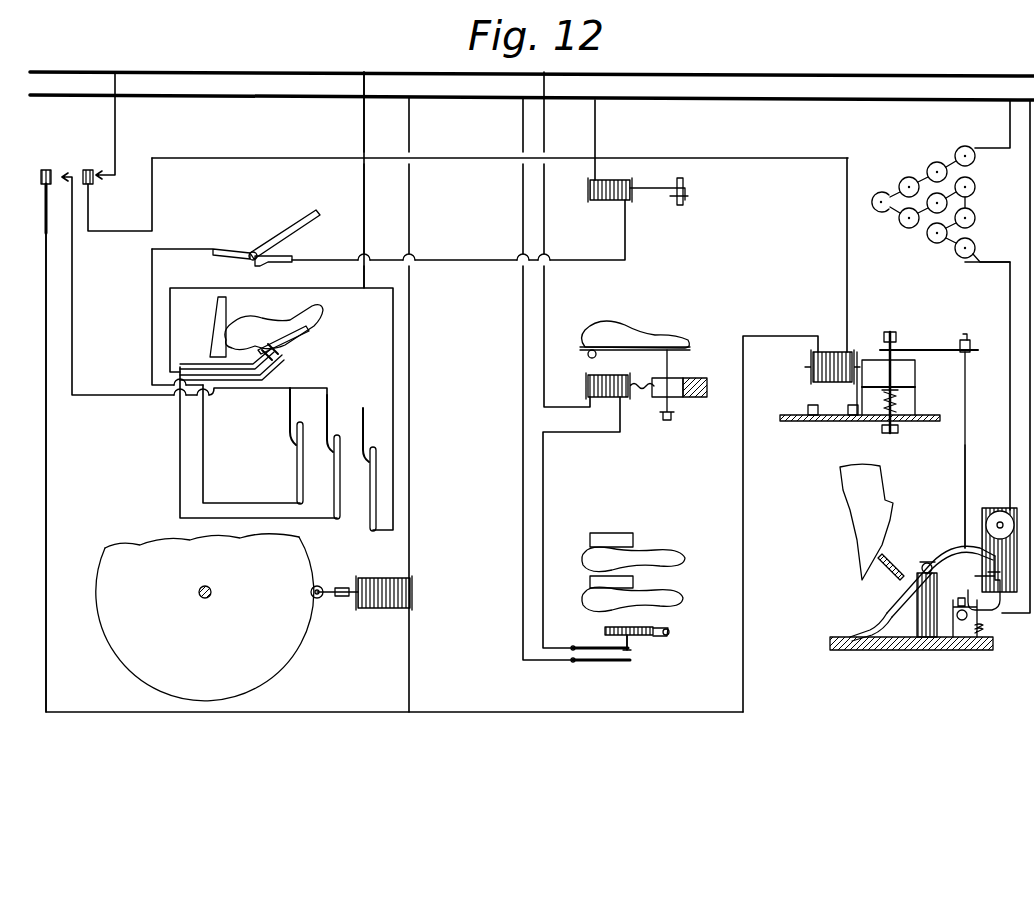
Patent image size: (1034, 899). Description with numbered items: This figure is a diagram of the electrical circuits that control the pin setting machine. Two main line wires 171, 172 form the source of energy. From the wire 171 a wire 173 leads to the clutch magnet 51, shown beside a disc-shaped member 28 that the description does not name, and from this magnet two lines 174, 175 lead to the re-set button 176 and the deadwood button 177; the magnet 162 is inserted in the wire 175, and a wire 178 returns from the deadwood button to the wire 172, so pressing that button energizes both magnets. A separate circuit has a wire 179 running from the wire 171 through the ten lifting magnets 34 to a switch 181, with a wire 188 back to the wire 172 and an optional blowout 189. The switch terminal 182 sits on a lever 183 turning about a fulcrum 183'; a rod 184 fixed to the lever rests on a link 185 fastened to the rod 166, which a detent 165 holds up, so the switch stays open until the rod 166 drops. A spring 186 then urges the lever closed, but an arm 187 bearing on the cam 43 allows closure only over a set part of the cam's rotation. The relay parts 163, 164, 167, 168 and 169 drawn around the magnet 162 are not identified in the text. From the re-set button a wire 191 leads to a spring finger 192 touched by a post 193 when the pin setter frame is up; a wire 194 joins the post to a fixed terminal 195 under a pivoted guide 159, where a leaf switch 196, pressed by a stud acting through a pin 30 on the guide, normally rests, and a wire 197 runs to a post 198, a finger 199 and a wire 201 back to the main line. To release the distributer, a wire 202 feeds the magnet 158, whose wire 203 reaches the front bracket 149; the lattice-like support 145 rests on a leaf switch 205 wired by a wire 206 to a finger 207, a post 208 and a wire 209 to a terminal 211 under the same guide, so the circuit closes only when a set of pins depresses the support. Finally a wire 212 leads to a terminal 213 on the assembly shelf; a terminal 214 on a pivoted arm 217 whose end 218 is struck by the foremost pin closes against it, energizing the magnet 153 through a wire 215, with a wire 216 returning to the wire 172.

The main line wire 172 is at (948, 76).
The main line wire 171 is at (929, 100).
The wire 178 is at (116, 114).
The switch button 176 is at (45, 192).
The switch button 177 is at (91, 186).
The wire 191 is at (72, 282).
The wire 206 is at (152, 329).
The wire 209 is at (180, 440).
The wire 194 is at (203, 454).
The spring contact finger 192 is at (289, 422).
The metallic contact post 193 is at (297, 478).
The spring contact finger 207 is at (328, 432).
The metallic contact post 208 is at (337, 522).
The finger 199 is at (367, 429).
The metallic contact post 198 is at (377, 471).
The fixed terminal 195 is at (282, 367).
The leaf switch 196 is at (280, 350).
The wire 197 is at (274, 350).
The pivotally mounted guide 159 is at (306, 329).
The bowling pin 30 is at (302, 320).
The fixed terminal 211 is at (252, 333).
The leaf switch 205 is at (234, 249).
The lattice-like support 145 is at (318, 211).
The front bracket 149 is at (294, 258).
The wire 201 is at (364, 210).
The wire 203 is at (460, 255).
The wire 173 is at (409, 394).
The wire 212 is at (523, 301).
The wire 216 is at (544, 284).
The wire 215 is at (543, 496).
The wire 202 is at (595, 124).
The magnet 158 is at (598, 203).
The magnet 153 is at (604, 400).
The end of arm 218 is at (620, 630).
The terminal 214 is at (588, 647).
The arm 217 is at (660, 636).
The terminal 213 is at (596, 663).
The wire 174 is at (322, 712).
The wire 175 is at (511, 712).
The rotary disc 28 is at (288, 650).
The magnet 51 is at (384, 611).
The wire 179 is at (1010, 288).
The magnets 34 is at (909, 229).
The wire 188 is at (1030, 423).
The magnet 162 is at (826, 351).
The base 163 is at (826, 422).
The armature 164 is at (863, 360).
The detent 165 is at (893, 352).
The bar 167 is at (905, 352).
The link 185 is at (966, 338).
The rod 166 is at (900, 388).
The bracket 168 is at (866, 376).
The spring 169 is at (896, 414).
The rod 184 is at (965, 466).
The cam 43 is at (860, 532).
The outwardly extending arm 187 is at (888, 574).
The lever 183 is at (941, 567).
The fulcrum 183' is at (918, 542).
The spring 186 is at (878, 640).
The blowout 189 is at (995, 512).
The terminal 182 is at (988, 578).
The switch 181 is at (985, 608).